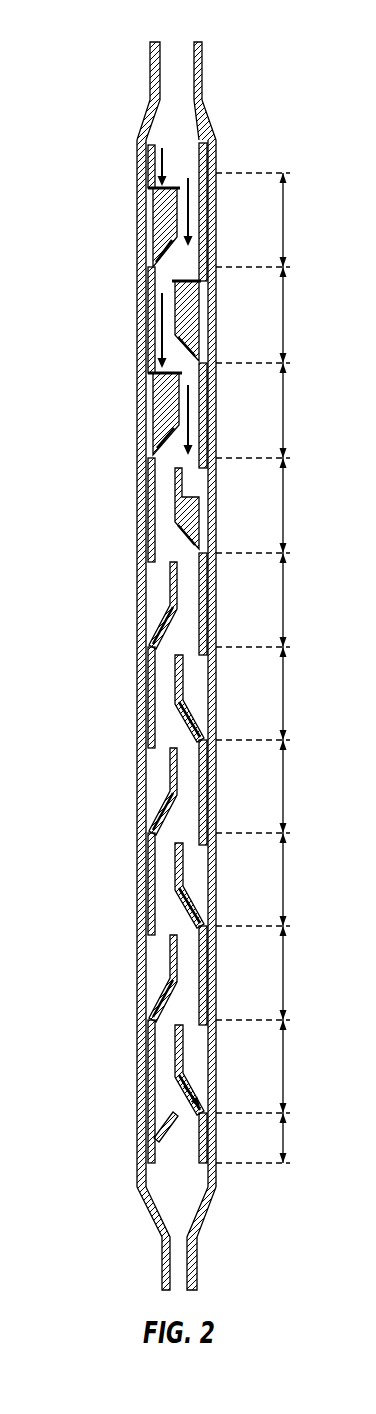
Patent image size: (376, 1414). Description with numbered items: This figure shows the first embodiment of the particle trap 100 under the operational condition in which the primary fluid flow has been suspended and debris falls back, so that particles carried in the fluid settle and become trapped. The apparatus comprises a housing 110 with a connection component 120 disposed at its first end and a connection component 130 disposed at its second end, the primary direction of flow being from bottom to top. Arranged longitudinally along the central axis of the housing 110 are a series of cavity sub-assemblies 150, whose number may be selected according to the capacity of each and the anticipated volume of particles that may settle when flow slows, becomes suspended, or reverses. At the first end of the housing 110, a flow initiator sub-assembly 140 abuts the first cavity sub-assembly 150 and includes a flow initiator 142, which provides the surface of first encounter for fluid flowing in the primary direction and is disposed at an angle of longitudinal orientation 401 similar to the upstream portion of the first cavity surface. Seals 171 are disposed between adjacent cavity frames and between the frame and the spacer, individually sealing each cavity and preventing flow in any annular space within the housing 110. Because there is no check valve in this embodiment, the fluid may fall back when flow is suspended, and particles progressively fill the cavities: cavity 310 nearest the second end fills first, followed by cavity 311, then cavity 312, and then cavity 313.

The particle trap 100 is at (115, 32).
The housing 110 is at (142, 172).
The connection component 120 is at (203, 1220).
The connection component 130 is at (203, 82).
The flow initiator sub-assembly 140 is at (288, 1142).
The flow initiator 142 is at (157, 1122).
The cavity sub-assembly 150 is at (283, 221).
The seal 171 is at (145, 270).
The cavity 310 is at (150, 216).
The cavity 311 is at (200, 302).
The cavity 312 is at (150, 398).
The cavity 313 is at (197, 520).
The angle of longitudinal orientation 401 is at (192, 1095).